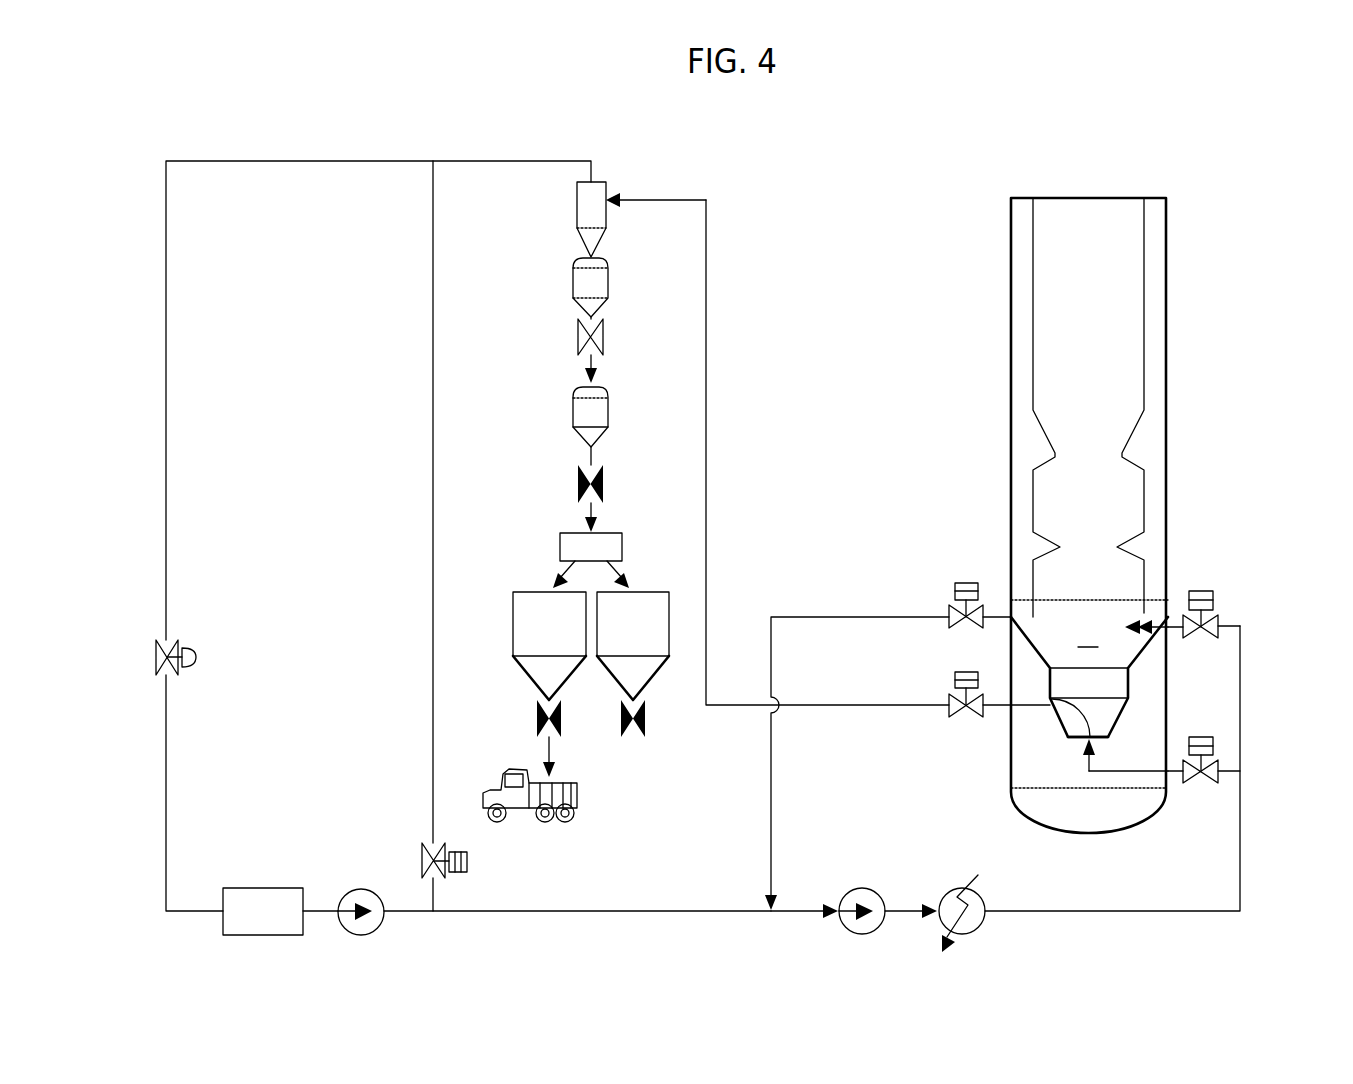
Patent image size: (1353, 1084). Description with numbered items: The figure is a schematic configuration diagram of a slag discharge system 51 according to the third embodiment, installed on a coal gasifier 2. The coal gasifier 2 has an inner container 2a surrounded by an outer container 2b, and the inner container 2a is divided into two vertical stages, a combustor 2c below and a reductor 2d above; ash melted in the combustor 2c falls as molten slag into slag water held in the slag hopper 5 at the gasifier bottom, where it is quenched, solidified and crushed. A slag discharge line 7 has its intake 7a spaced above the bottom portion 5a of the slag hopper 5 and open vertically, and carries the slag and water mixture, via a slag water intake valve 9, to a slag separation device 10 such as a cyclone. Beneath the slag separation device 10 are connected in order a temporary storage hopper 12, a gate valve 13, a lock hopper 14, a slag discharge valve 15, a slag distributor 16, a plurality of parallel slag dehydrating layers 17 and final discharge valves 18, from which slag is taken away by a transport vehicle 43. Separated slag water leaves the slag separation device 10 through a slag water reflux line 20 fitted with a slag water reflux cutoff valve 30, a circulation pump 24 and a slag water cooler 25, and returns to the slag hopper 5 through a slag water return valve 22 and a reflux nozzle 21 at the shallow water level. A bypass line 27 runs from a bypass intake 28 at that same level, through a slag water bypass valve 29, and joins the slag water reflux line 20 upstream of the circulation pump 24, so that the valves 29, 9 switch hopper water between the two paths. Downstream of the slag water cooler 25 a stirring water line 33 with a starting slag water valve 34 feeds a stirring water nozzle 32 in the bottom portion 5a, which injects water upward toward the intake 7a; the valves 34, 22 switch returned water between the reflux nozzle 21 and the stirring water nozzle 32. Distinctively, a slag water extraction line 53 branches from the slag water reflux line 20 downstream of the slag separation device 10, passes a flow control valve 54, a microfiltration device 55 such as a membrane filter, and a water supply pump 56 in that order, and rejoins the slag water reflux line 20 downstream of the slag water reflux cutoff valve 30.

The slag discharge system 51 is at (811, 203).
The coal gasifier 2 is at (1088, 515).
The inner container 2a is at (1144, 282).
The outer container 2b is at (1166, 344).
The combustor 2c is at (1100, 523).
The reductor 2d is at (1100, 321).
The slag hopper 5 is at (1135, 701).
The bottom portion 5a is at (1130, 718).
The slag discharge line 7 is at (708, 353).
The intake 7a is at (1060, 726).
The slag water intake valve 9 is at (955, 673).
The slag separation device 10 is at (577, 200).
The temporary storage hopper 12 is at (573, 280).
The gate valve 13 is at (578, 342).
The lock hopper 14 is at (573, 410).
The slag discharge valve 15 is at (578, 488).
The slag distributor 16 is at (560, 546).
The slag dehydrating layers 17 is at (513, 622).
The final discharge valves 18 is at (537, 718).
The slag water reflux line 20 is at (433, 312).
The reflux nozzle 21 is at (1160, 612).
The slag water return valve 22 is at (1215, 596).
The circulation pump 24 is at (858, 888).
The slag water cooler 25 is at (960, 888).
The bypass line 27 is at (829, 617).
The bypass intake 28 is at (1011, 617).
The slag water bypass valve 29 is at (955, 582).
The slag water reflux cutoff valve 30 is at (468, 862).
The stirring water nozzle 32 is at (1085, 766).
The stirring water line 33 is at (1140, 776).
The starting slag water valve 34 is at (1215, 741).
The transport vehicle 43 is at (580, 795).
The slag water extraction line 53 is at (166, 273).
The flow control valve 54 is at (155, 652).
The microfiltration device 55 is at (262, 888).
The water supply pump 56 is at (359, 888).